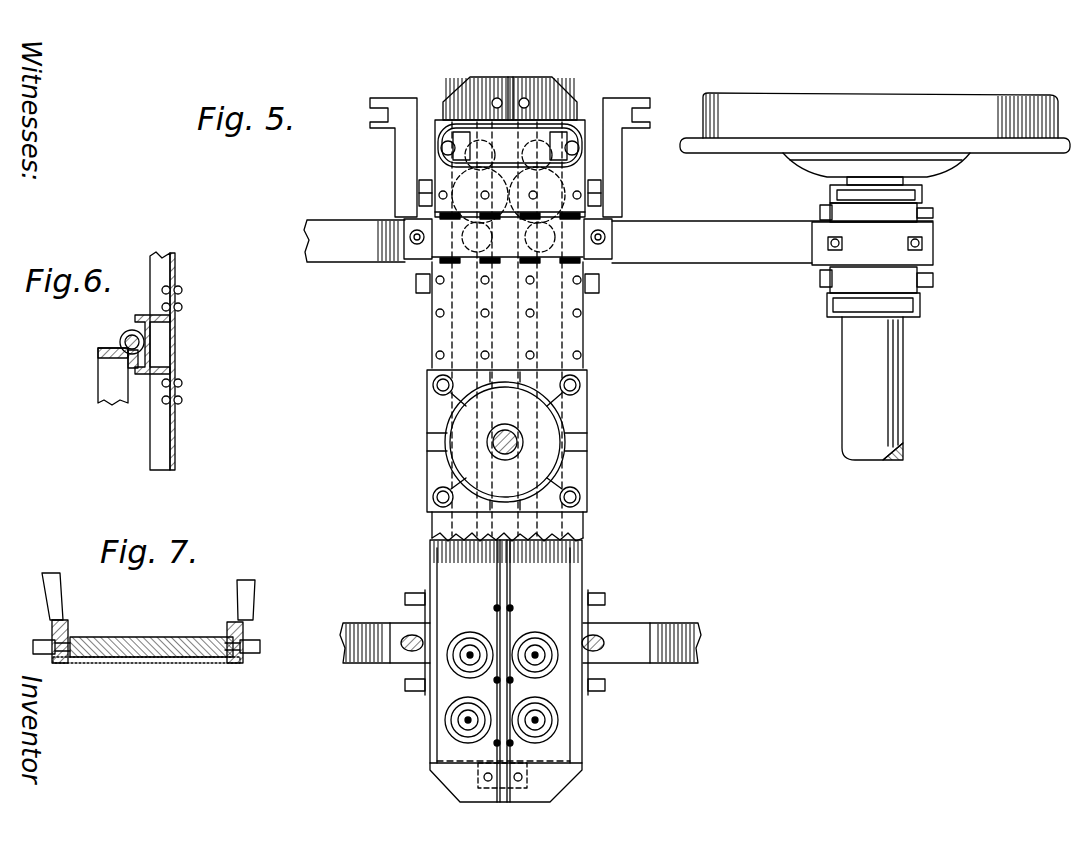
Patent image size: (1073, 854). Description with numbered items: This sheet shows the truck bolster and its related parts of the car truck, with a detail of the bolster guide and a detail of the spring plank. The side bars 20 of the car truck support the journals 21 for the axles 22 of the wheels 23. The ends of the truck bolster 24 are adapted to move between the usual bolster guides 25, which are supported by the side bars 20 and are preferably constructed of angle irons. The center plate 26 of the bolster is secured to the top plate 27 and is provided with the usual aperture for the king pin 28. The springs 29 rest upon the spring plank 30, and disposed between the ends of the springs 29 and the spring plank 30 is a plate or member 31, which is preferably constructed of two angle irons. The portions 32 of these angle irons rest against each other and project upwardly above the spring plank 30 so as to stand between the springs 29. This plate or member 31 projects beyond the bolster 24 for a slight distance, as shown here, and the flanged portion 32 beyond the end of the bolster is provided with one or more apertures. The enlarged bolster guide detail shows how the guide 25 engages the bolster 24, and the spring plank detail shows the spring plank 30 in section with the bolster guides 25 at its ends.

In FIG. 5, the side bars 20 is at (720, 240).
In FIG. 5, the journals 21 is at (852, 283).
In FIG. 5, the axles 22 is at (858, 392).
In FIG. 5, the wheels 23 is at (746, 132).
In FIG. 5, the truck bolster 24 is at (483, 298).
In FIG. 6, the truck bolster 24 is at (175, 283).
In FIG. 5, the bolster guides 25 is at (402, 163).
In FIG. 6, the bolster guides 25 is at (100, 382).
In FIG. 7, the bolster guides 25 is at (55, 598).
In FIG. 5, the center plate 26 is at (582, 483).
In FIG. 5, the top plate 27 is at (575, 348).
In FIG. 5, the king pin 28 is at (505, 434).
In FIG. 5, the springs 29 is at (517, 640).
In FIG. 7, the spring plank 30 is at (165, 637).
In FIG. 5, the plate or member 31 is at (497, 84).
In FIG. 5, the portions 32 is at (505, 757).